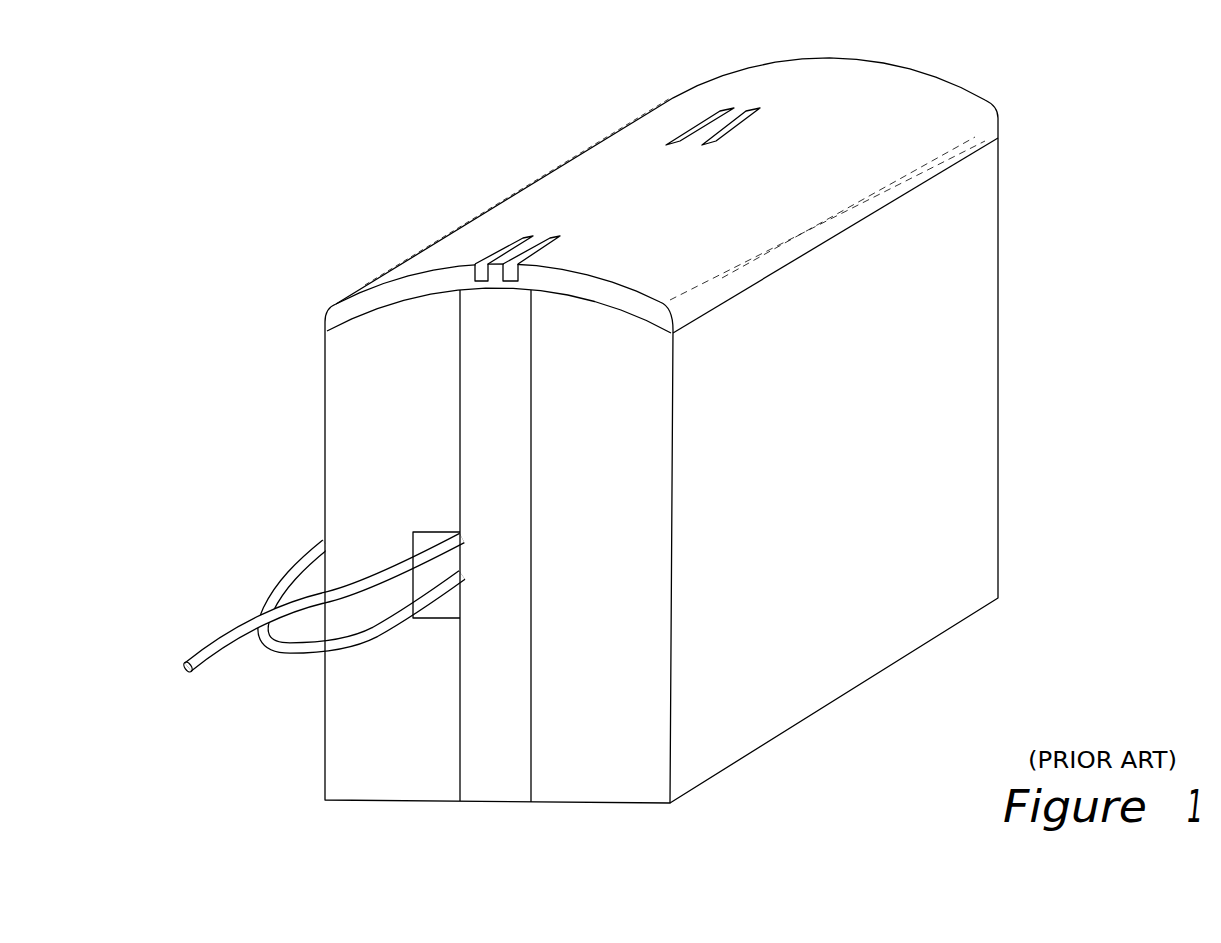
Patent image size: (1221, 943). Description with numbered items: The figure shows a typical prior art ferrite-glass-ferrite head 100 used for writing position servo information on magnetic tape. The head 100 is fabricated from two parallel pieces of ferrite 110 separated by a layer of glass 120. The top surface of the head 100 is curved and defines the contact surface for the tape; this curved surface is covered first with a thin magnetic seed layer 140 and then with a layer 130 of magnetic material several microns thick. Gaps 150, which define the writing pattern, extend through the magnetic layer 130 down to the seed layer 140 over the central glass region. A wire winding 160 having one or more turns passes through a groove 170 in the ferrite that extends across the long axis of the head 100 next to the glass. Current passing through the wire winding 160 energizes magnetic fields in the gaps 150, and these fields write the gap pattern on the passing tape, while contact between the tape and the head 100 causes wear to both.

The head 100 is at (1093, 64).
The ferrite 110 is at (408, 774).
The layer of glass 120 is at (517, 774).
The layer of magnetic material 130 is at (761, 203).
The magnetic seed layer 140 is at (611, 322).
The gaps 150 is at (685, 133).
The wire winding 160 is at (205, 639).
The groove 170 is at (439, 601).